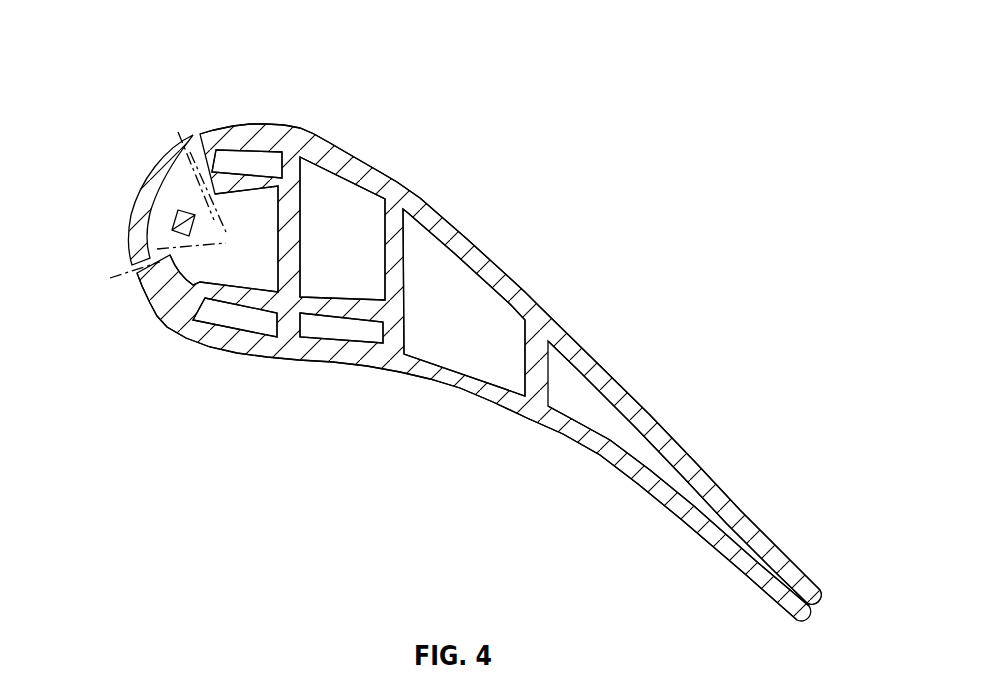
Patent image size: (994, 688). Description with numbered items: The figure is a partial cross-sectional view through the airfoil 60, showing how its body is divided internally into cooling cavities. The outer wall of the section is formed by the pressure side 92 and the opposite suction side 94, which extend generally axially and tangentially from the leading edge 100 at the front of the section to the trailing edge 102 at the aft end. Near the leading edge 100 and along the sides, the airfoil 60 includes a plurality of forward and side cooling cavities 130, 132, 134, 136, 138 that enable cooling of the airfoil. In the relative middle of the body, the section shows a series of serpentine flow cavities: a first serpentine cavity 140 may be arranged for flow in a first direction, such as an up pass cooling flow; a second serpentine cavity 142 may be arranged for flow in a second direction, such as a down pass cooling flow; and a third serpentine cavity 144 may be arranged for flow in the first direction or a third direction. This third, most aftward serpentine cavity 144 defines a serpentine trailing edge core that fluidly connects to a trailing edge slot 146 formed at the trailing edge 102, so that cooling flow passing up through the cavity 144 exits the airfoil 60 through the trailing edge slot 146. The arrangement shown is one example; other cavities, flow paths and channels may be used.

The airfoil 60 is at (160, 58).
The pressure side 92 is at (523, 421).
The suction side 94 is at (483, 252).
The leading edge 100 is at (130, 217).
The trailing edge 102 is at (822, 597).
The forward and side cooling cavity 130 is at (241, 320).
The forward and side cooling cavity 132 is at (333, 328).
The forward and side cooling cavity 134 is at (170, 212).
The forward and side cooling cavity 136 is at (264, 162).
The forward and side cooling cavity 138 is at (259, 207).
The first serpentine cavity 140 is at (338, 192).
The second serpentine cavity 142 is at (486, 316).
The third serpentine cavity 144 is at (579, 392).
The trailing edge slot 146 is at (814, 611).